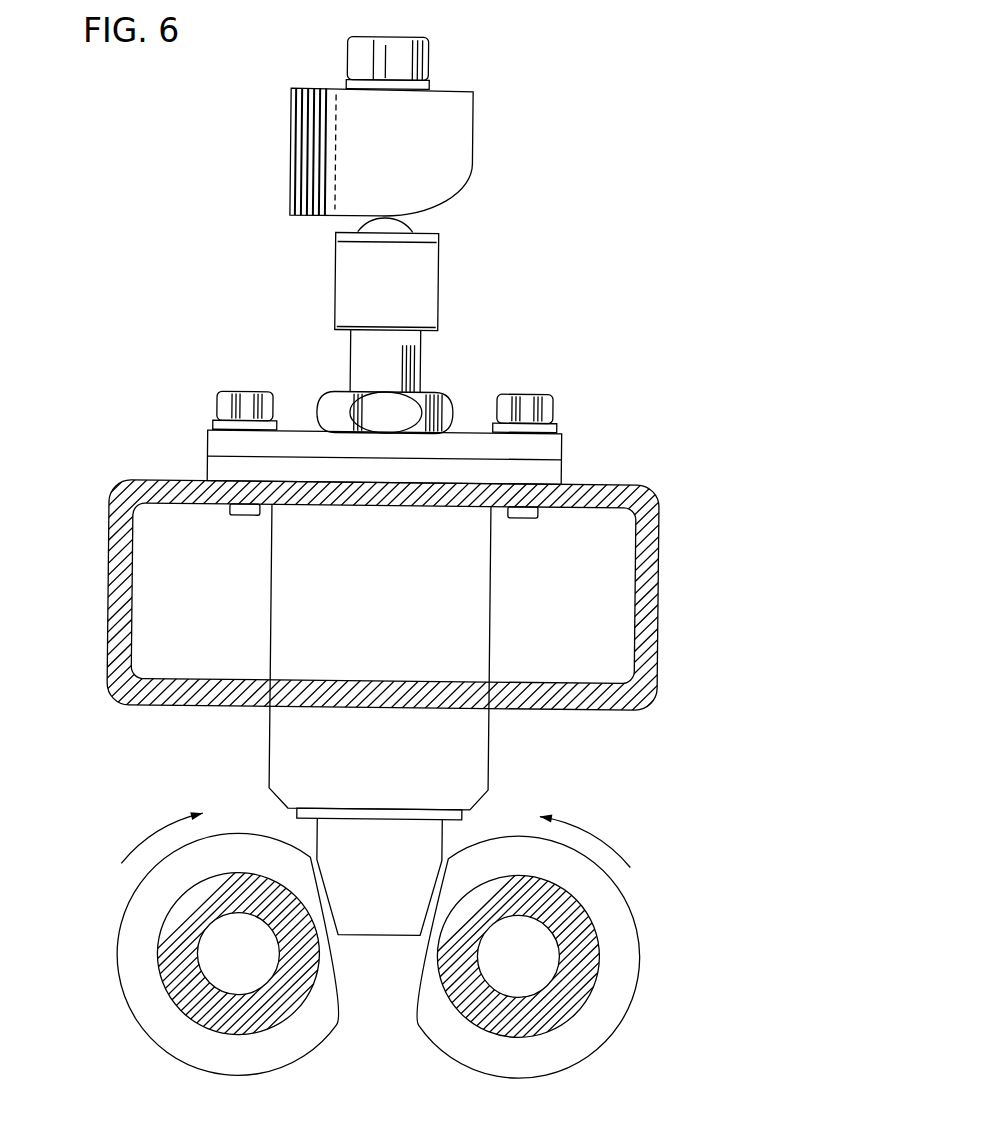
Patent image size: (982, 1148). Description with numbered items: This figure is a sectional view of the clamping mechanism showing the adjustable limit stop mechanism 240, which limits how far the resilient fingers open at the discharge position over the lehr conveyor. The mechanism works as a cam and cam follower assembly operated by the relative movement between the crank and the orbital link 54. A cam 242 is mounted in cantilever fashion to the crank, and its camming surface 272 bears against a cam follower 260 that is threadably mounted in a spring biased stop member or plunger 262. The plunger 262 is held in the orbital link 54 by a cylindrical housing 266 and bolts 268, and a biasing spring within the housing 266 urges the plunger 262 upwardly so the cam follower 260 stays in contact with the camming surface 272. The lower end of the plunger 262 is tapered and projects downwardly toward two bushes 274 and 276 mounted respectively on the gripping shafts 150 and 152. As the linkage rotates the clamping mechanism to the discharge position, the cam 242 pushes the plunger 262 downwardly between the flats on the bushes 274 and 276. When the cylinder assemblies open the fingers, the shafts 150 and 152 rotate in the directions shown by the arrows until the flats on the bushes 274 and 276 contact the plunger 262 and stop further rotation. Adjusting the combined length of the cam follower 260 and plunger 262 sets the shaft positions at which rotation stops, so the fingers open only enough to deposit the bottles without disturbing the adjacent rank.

The adjustable limit stop mechanism 240 is at (621, 238).
The cam 242 is at (457, 117).
The camming surface 272 is at (448, 194).
The cam follower 260 is at (424, 287).
The bolts 268 is at (243, 394).
The orbital link 54 is at (629, 486).
The cylindrical housing 266 is at (482, 609).
The plunger 262 is at (376, 922).
The gripping shaft 150 is at (176, 924).
The gripping shaft 152 is at (594, 945).
The bush 274 is at (156, 1007).
The bush 276 is at (609, 1018).